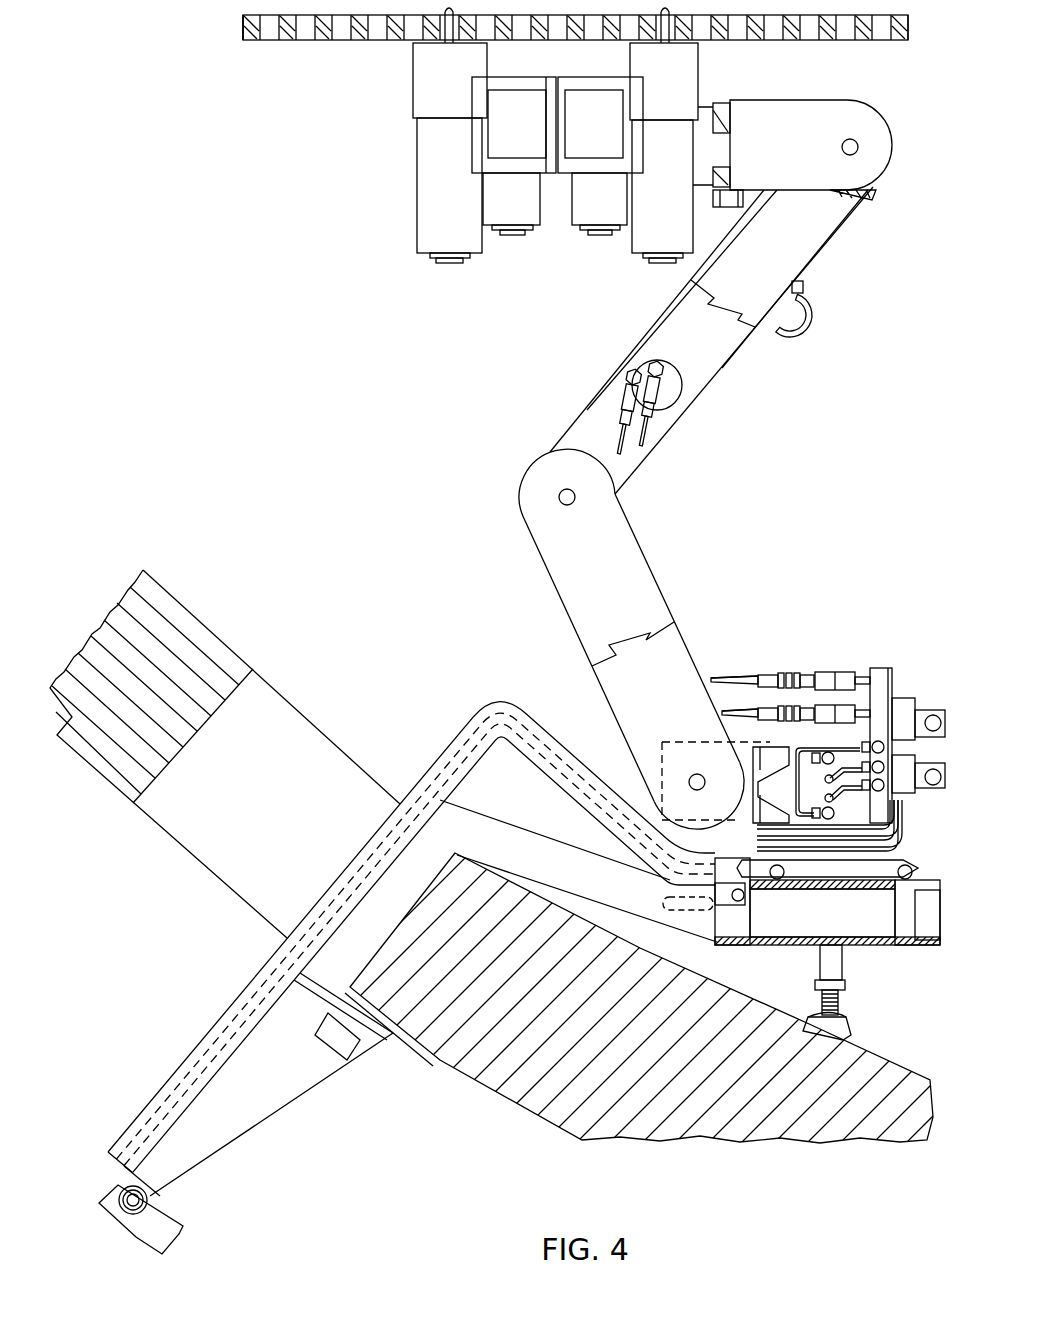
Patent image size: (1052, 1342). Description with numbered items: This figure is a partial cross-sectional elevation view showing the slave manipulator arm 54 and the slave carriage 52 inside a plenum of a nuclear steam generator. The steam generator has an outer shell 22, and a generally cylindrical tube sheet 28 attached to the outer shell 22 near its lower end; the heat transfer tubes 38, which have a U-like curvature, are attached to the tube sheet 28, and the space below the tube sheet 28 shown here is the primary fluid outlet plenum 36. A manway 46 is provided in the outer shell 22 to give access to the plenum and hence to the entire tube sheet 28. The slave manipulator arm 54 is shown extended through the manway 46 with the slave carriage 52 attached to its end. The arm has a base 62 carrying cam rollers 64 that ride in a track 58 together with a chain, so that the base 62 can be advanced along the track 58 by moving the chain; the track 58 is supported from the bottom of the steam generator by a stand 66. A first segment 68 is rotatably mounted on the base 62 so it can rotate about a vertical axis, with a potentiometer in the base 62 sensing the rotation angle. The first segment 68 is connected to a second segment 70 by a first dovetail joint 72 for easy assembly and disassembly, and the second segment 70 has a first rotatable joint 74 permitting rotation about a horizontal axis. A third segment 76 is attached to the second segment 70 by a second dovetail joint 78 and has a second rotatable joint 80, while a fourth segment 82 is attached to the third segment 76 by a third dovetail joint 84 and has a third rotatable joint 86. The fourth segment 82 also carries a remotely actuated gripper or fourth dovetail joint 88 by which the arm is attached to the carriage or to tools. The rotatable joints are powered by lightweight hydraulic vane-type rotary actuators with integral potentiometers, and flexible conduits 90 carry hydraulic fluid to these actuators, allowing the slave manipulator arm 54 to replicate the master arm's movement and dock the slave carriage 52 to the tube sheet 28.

The outer shell 22 is at (518, 1108).
The tube sheet 28 is at (355, 41).
The primary fluid outlet plenum 36 is at (454, 362).
The tubes 38 is at (300, 41).
The manway 46 is at (152, 790).
The slave carriage 52 is at (422, 210).
The slave manipulator arm 54 is at (700, 641).
The track 58 is at (497, 730).
The base 62 is at (850, 872).
The cam rollers 64 is at (777, 880).
The stand 66 is at (840, 968).
The first segment 68 is at (810, 803).
The second segment 70 is at (692, 683).
The first dovetail joint 72 is at (766, 758).
The first rotatable joint 74 is at (689, 782).
The third segment 76 is at (697, 373).
The second dovetail joint 78 is at (673, 620).
The second rotatable joint 80 is at (575, 497).
The fourth segment 82 is at (826, 216).
The third dovetail joint 84 is at (735, 312).
The third rotatable joint 86 is at (856, 147).
The fourth dovetail joint 88 is at (725, 140).
The flexible conduits 90 is at (812, 329).